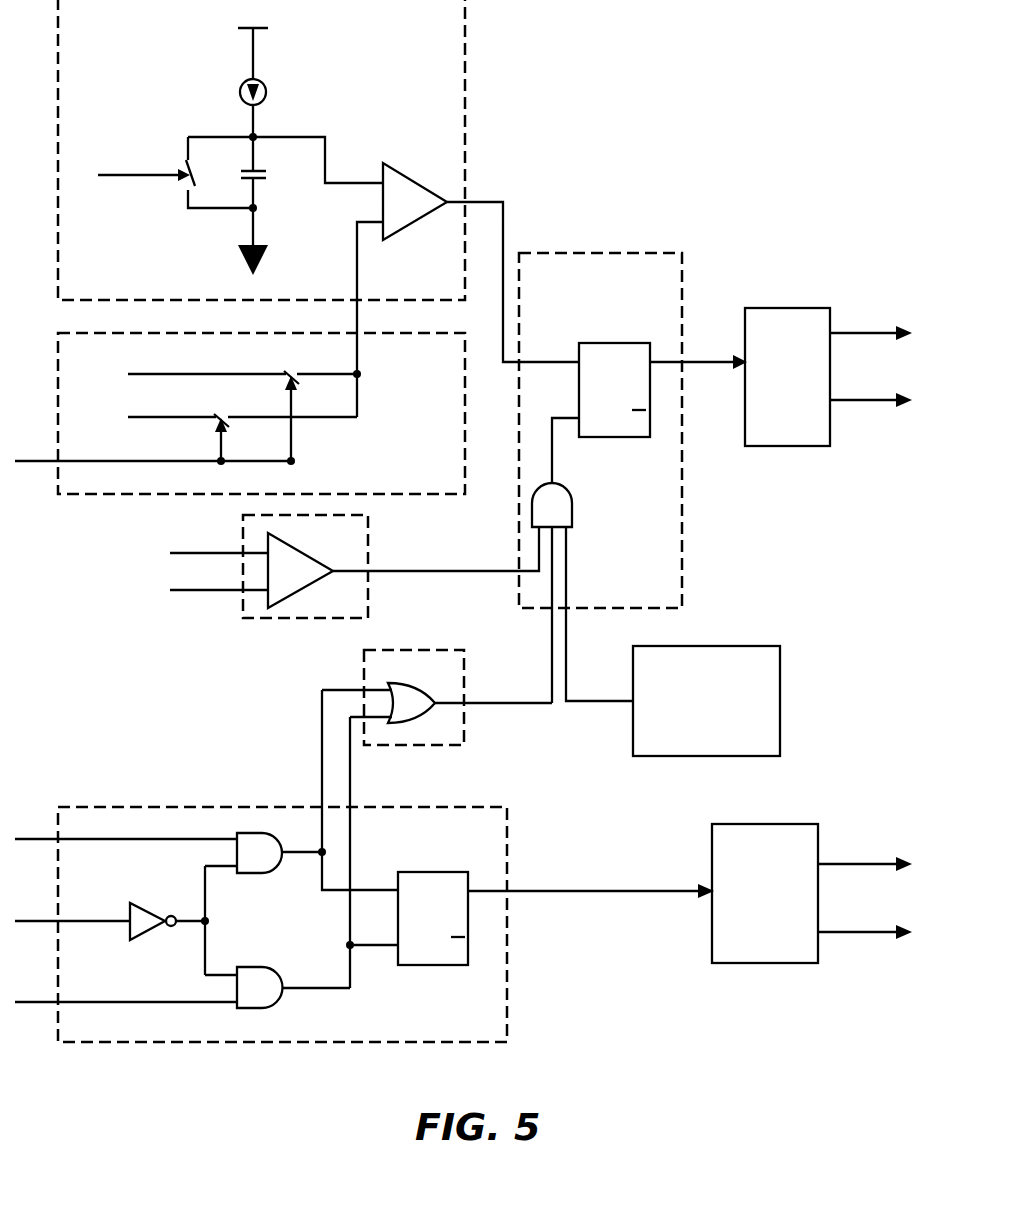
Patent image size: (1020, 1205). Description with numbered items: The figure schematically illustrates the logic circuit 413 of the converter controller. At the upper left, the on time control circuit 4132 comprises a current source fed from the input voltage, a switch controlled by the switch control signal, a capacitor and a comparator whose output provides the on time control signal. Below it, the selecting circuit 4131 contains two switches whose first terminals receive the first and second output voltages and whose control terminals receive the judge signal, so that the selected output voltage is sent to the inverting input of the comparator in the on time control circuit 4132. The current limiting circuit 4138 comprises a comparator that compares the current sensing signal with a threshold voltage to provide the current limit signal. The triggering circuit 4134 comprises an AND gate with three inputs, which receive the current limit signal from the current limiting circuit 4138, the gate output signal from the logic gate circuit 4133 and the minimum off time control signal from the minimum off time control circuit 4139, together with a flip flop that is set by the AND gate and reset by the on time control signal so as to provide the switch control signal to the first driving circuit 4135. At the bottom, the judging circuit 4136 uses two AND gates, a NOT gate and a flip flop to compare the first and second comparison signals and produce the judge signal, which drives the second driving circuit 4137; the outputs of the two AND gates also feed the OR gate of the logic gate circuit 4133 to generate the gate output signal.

The logic circuit 413 is at (804, 73).
The selecting circuit 4131 is at (112, 494).
The on time control circuit 4132 is at (107, 300).
The logic gate circuit 4133 is at (421, 745).
The triggering circuit 4134 is at (532, 608).
The first driving circuit 4135 is at (772, 446).
The judging circuit 4136 is at (113, 1042).
The second driving circuit 4137 is at (732, 963).
The current limiting circuit 4138 is at (269, 618).
The minimum off time control circuit 4139 is at (645, 756).